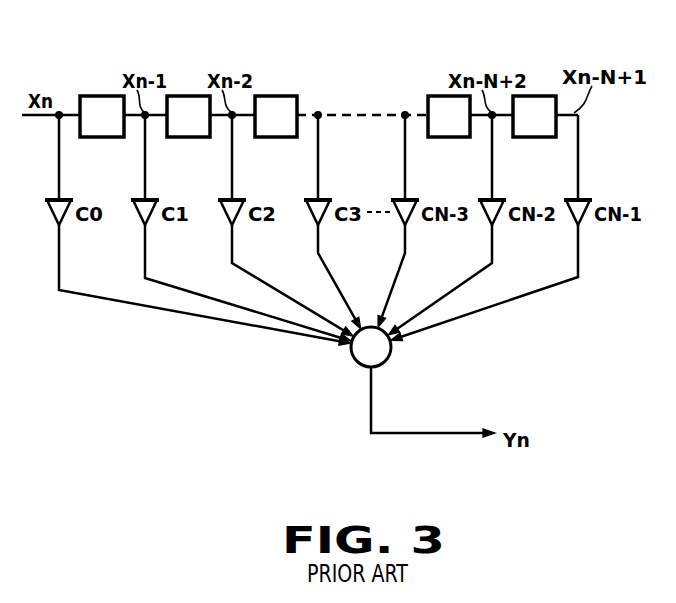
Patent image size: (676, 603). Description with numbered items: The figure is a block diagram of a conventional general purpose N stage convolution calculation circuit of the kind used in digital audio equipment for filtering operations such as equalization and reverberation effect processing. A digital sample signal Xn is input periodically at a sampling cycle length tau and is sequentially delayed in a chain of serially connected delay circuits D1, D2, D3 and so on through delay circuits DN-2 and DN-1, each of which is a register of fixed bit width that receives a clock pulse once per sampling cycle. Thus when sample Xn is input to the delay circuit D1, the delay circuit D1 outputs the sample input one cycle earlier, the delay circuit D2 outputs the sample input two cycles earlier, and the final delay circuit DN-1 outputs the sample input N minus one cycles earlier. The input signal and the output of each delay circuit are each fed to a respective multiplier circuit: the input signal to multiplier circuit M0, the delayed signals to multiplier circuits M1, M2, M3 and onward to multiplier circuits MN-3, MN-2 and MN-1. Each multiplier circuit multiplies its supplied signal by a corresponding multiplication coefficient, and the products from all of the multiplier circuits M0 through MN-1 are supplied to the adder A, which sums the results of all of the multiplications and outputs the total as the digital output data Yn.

The delay circuit D1 is at (97, 96).
The delay circuit D2 is at (185, 96).
The delay circuit D3 is at (276, 96).
The delay circuit DN-2 is at (437, 96).
The delay circuit DN-1 is at (540, 96).
The multiplier circuit M0 is at (50, 200).
The multiplier circuit M1 is at (136, 200).
The multiplier circuit M2 is at (223, 200).
The multiplier circuit M3 is at (309, 200).
The multiplier circuit MN-3 is at (396, 200).
The multiplier circuit MN-2 is at (483, 200).
The multiplier circuit MN-1 is at (569, 200).
The adder A is at (391, 350).